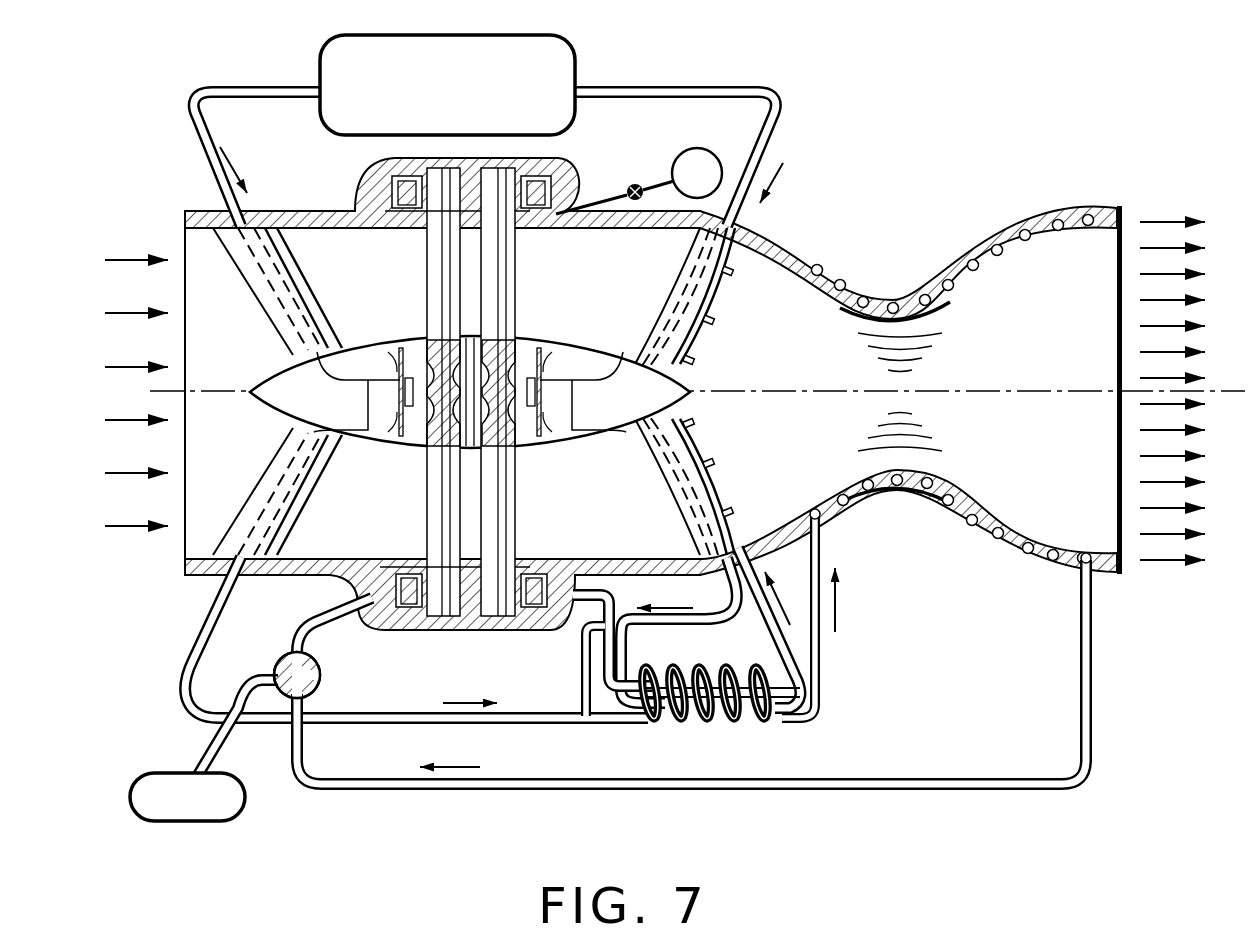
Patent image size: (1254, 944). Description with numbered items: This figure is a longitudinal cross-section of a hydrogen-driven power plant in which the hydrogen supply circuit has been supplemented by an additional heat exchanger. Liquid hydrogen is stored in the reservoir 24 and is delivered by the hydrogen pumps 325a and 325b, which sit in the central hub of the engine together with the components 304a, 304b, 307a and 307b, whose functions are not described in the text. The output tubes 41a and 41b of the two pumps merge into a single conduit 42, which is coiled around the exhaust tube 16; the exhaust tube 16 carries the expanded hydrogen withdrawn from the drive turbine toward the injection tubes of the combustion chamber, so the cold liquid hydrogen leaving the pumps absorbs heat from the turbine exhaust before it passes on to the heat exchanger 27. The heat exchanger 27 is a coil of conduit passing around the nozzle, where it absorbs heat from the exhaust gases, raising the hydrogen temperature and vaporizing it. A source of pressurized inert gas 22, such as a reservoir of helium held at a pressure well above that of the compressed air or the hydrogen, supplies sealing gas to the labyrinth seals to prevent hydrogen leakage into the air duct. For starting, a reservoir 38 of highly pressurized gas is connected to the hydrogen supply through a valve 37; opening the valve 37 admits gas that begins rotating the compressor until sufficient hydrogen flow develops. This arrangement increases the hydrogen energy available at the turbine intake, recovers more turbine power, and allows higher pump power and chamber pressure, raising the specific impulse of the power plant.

The exhaust tube 16 is at (613, 650).
The source of pressurized inert gas 22 is at (697, 167).
The reservoir 24 is at (458, 90).
The heat exchanger 27 is at (944, 498).
The valve 37 is at (284, 651).
The reservoir of highly pressurized gas 38 is at (210, 811).
The output tube 41a is at (585, 668).
The output tube 41b is at (387, 712).
The single conduit 42 is at (613, 725).
The first shaft 304a is at (432, 282).
The second shaft 304b is at (507, 295).
The first bearing 307a is at (395, 182).
The second bearing 307b is at (525, 178).
The hydrogen pump 325a is at (386, 398).
The hydrogen pump 325b is at (558, 398).